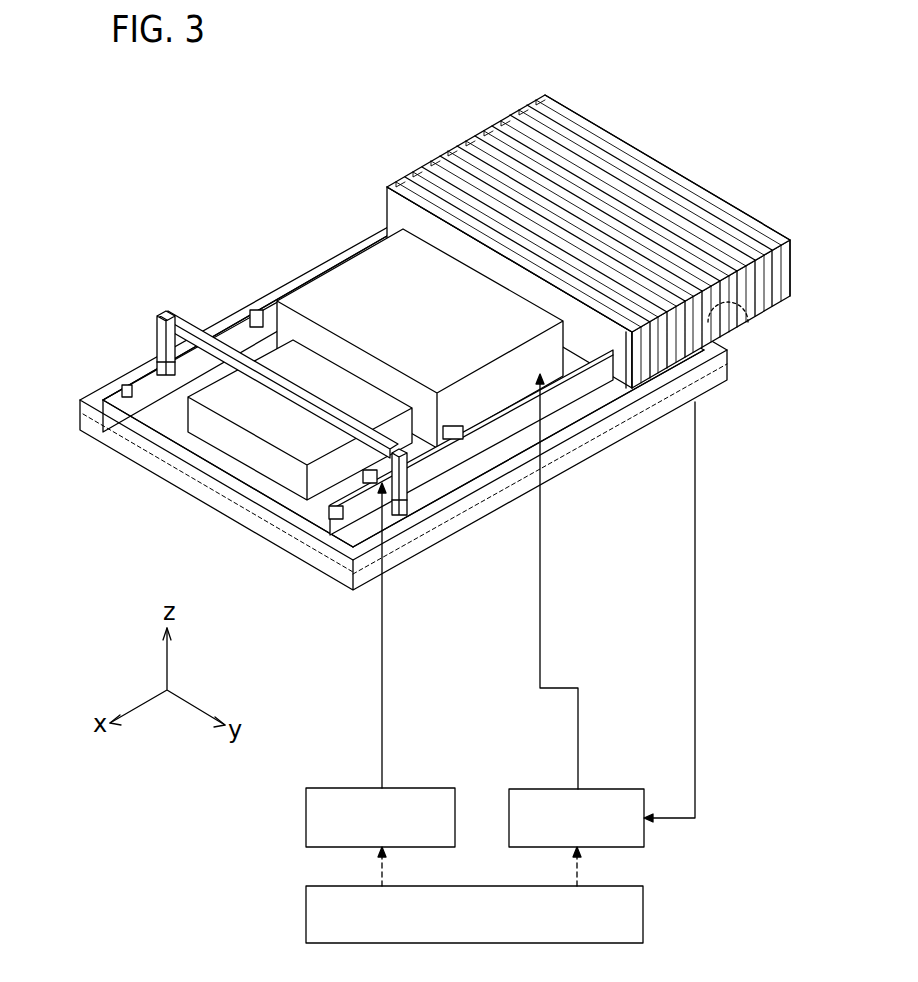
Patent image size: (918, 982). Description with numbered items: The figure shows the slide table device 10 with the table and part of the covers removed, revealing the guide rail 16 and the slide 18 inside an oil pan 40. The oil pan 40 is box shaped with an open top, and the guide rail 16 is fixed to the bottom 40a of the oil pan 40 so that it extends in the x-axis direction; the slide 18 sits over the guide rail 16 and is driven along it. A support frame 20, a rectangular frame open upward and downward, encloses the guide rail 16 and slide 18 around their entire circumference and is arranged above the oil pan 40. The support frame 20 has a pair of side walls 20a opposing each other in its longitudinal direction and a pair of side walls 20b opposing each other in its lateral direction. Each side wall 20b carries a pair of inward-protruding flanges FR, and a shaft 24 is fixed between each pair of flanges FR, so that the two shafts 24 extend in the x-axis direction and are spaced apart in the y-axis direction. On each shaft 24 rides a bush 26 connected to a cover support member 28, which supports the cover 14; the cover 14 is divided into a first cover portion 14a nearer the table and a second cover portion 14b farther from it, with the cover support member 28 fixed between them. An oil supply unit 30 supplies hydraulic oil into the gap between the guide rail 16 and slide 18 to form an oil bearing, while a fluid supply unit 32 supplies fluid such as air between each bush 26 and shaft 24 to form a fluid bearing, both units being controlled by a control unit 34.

The slide table device 10 is at (339, 152).
The cover 14 is at (467, 83).
The first cover portion 14a is at (415, 172).
The second cover portion 14b is at (523, 113).
The guide rail 16 is at (272, 365).
The slide 18 is at (372, 290).
The support frame 20 is at (130, 450).
The side walls 20a is at (213, 487).
The side walls 20b is at (258, 307).
The shafts 24 is at (223, 340).
The bush 26 is at (160, 360).
The cover support member 28 is at (402, 512).
The oil supply unit 30 is at (620, 787).
The fluid supply unit 32 is at (438, 785).
The control unit 34 is at (645, 915).
The oil pan 40 is at (93, 384).
The bottom 40a is at (355, 545).
The flanges FR is at (262, 303).